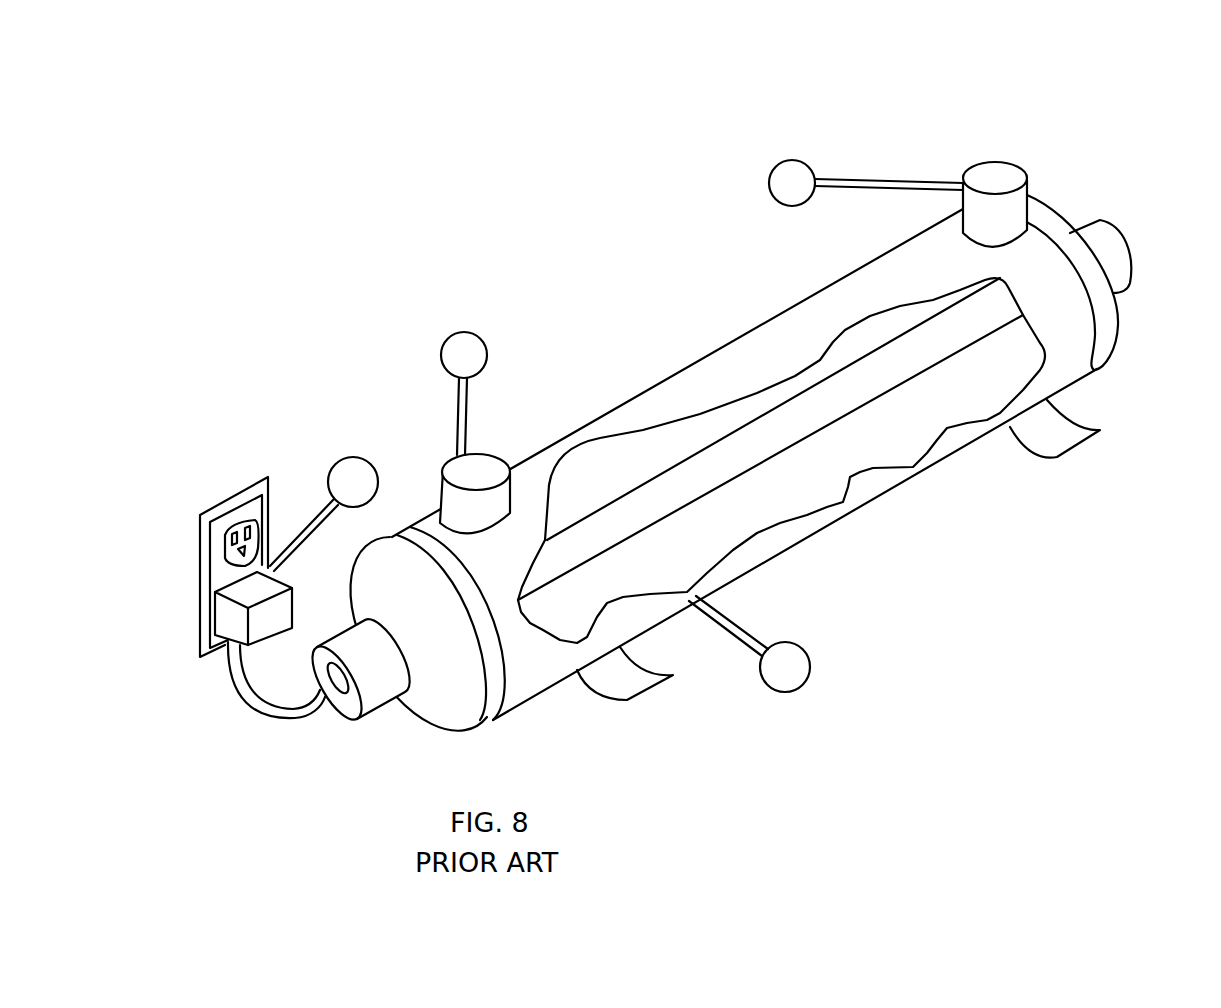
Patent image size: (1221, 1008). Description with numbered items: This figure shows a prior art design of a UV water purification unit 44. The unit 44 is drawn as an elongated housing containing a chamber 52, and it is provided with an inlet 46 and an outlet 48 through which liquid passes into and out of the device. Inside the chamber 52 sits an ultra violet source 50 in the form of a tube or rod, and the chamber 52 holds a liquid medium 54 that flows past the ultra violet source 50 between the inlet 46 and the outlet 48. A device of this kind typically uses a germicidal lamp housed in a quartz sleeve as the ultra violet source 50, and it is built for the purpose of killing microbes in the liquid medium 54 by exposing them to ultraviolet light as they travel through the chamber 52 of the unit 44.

The UV water purification unit 44 is at (647, 310).
The inlet 46 is at (457, 457).
The outlet 48 is at (988, 170).
The ultra violet source 50 is at (772, 428).
The chamber 52 is at (1067, 357).
The liquid medium 54 is at (970, 393).